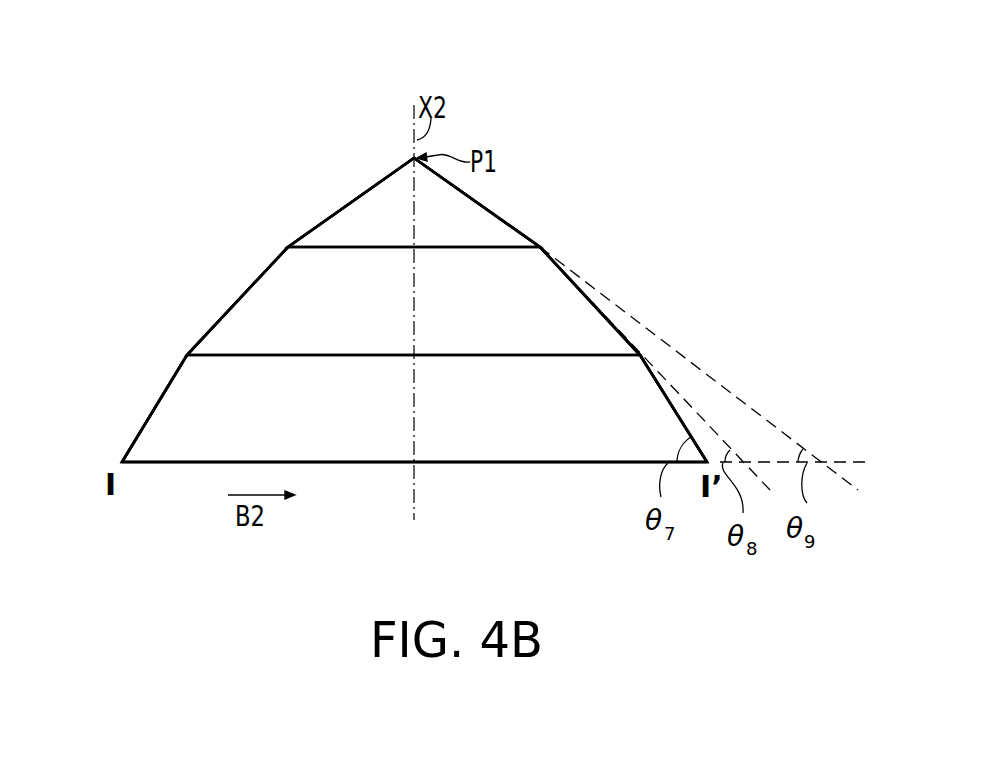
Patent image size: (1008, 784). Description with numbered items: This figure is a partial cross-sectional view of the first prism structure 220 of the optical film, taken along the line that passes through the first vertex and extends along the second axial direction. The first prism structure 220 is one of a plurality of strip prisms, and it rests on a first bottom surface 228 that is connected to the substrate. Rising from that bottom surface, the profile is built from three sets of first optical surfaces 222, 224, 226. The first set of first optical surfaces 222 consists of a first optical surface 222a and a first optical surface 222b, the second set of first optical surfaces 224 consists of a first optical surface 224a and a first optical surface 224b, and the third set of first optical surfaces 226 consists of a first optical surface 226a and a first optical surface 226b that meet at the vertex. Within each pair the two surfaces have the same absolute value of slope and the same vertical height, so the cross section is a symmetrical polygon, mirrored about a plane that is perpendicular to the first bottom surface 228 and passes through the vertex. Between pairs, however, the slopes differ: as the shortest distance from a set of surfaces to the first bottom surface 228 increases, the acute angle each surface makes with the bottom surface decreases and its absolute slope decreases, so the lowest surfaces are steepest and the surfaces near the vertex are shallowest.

The first prism structure 220 is at (105, 90).
The first set of first optical surfaces 222 is at (535, 406).
The first optical surface 222a is at (140, 428).
The first optical surface 222b is at (690, 430).
The second set of first optical surfaces 224 is at (488, 296).
The first optical surface 224a is at (215, 325).
The first optical surface 224b is at (613, 327).
The third set of first optical surfaces 226 is at (532, 56).
The first optical surface 226a is at (373, 188).
The first optical surface 226b is at (495, 214).
The first bottom surface 228 is at (458, 464).